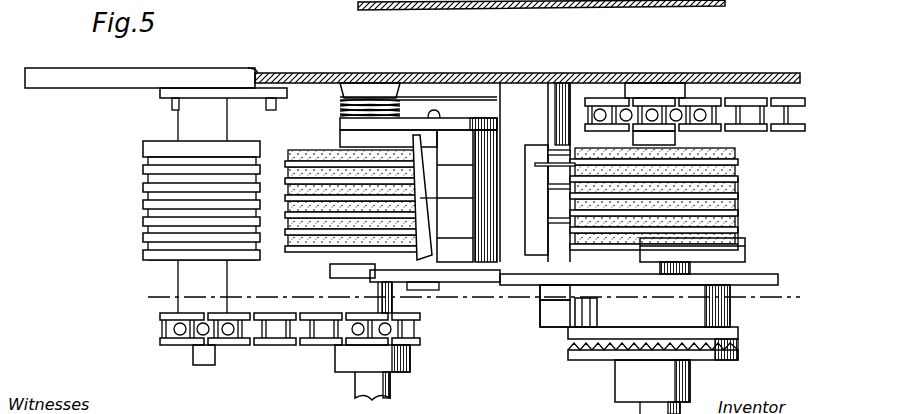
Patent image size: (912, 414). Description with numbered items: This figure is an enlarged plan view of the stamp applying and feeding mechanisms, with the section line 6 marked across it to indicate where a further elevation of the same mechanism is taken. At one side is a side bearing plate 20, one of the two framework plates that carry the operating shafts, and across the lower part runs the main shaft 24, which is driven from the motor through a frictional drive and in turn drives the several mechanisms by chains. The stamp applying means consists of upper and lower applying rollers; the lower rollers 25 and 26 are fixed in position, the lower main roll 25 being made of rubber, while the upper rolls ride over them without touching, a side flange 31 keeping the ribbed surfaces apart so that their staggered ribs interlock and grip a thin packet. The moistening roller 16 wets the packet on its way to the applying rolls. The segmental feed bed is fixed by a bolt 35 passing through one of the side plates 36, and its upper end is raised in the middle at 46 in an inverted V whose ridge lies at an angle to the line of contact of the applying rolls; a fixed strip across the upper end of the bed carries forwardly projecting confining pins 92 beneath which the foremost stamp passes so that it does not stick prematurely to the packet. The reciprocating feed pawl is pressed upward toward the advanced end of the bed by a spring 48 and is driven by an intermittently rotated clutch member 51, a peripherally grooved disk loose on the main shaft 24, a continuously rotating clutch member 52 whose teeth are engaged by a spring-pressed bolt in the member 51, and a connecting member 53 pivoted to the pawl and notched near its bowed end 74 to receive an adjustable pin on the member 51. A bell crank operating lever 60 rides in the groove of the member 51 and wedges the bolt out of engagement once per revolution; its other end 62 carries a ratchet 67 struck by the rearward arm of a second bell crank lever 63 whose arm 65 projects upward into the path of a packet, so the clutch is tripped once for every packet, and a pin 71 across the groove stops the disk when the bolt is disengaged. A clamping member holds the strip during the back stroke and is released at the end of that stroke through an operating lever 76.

The section line 6 is at (146, 297).
The moistening roller 16 is at (738, 162).
The side bearing plate 20 is at (450, 73).
The main shaft 24 is at (640, 407).
The lower main applying roller 25 is at (310, 238).
The lower applying roller 26 is at (150, 203).
The side flange 31 is at (147, 260).
The bolt 35 is at (504, 73).
The side plate 36 is at (498, 136).
The raised portion of feed bed 46 is at (428, 185).
The spring 48 is at (378, 98).
The intermittently rotated clutch member 51 is at (730, 298).
The continuously rotating clutch member 52 is at (742, 352).
The connecting member 53 is at (548, 302).
The operating lever 60 is at (566, 325).
The lever end 62 is at (555, 272).
The second bell crank lever 63 is at (748, 248).
The arm 65 is at (740, 225).
The ratchet 67 is at (548, 255).
The pin 71 is at (598, 314).
The end of connecting member 74 is at (776, 283).
The operating lever 76 is at (475, 274).
The confining pins 92 is at (430, 234).